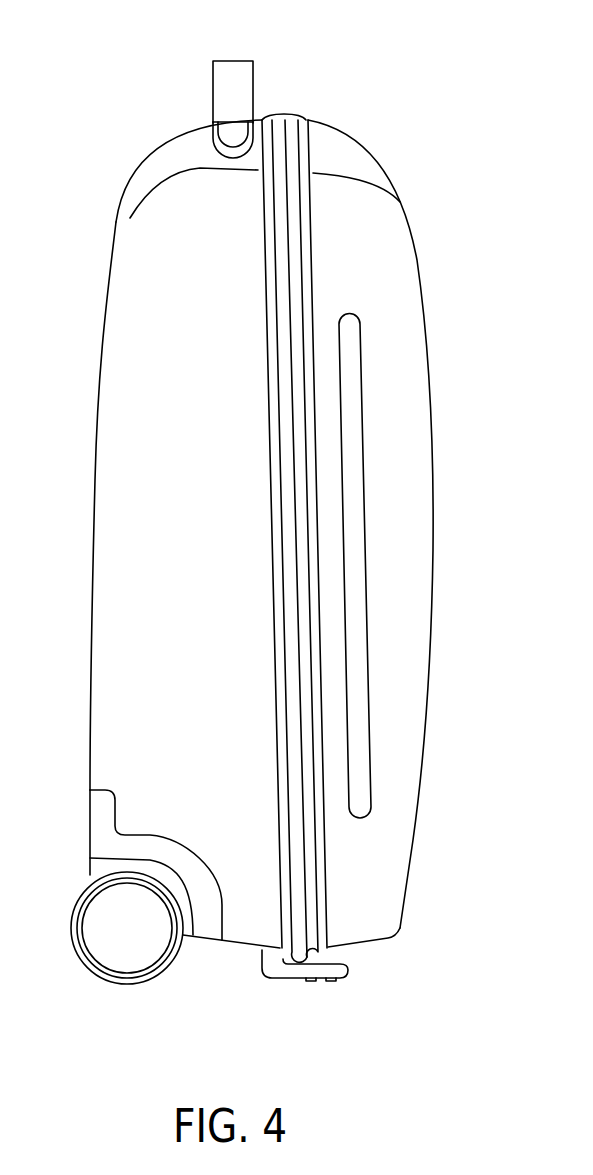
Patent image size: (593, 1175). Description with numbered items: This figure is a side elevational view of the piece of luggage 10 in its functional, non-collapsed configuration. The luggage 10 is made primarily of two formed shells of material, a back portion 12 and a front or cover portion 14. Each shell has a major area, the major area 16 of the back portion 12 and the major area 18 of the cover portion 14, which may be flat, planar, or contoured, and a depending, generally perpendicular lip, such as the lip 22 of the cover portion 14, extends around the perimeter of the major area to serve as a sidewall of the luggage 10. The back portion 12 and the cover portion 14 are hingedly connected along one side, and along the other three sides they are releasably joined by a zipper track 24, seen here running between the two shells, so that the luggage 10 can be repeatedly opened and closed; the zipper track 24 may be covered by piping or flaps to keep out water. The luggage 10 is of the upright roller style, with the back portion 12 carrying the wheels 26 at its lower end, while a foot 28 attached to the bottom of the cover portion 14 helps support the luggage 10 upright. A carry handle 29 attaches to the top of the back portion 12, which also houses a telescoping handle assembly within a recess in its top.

The piece of luggage 10 is at (158, 119).
The shell of material (back portion) 12 is at (97, 423).
The shell of material (front or cover portion) 14 is at (421, 282).
The major area 16 is at (90, 582).
The major area 18 is at (432, 433).
The lip 22 is at (412, 516).
The zipper track 24 is at (285, 137).
The wheels 26 is at (120, 962).
The foot 28 is at (283, 975).
The carry handle 29 is at (240, 70).